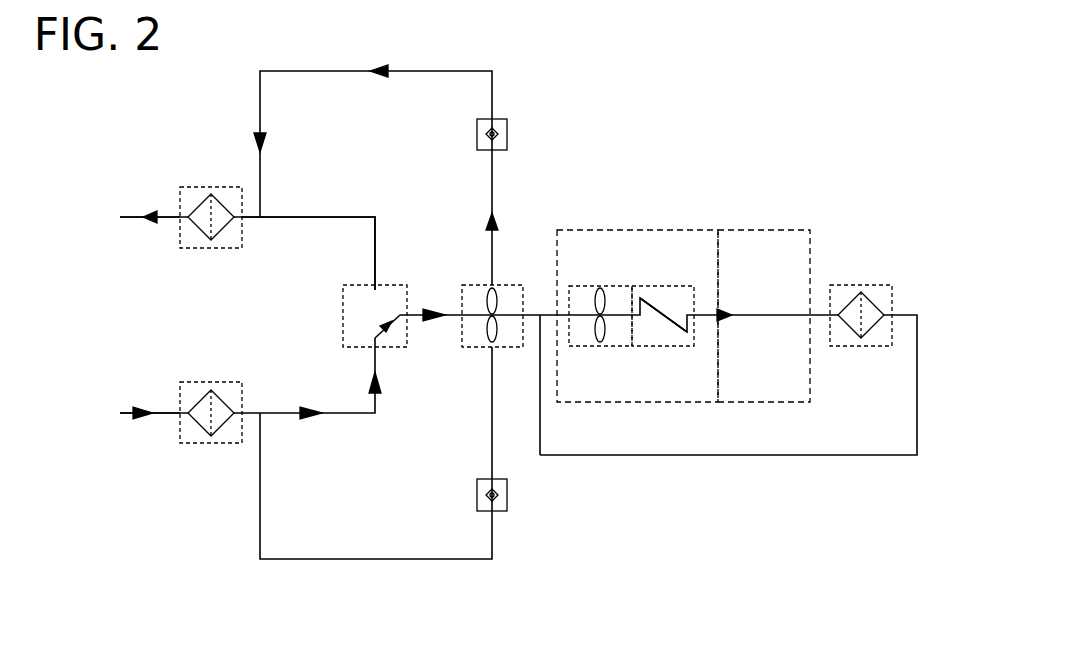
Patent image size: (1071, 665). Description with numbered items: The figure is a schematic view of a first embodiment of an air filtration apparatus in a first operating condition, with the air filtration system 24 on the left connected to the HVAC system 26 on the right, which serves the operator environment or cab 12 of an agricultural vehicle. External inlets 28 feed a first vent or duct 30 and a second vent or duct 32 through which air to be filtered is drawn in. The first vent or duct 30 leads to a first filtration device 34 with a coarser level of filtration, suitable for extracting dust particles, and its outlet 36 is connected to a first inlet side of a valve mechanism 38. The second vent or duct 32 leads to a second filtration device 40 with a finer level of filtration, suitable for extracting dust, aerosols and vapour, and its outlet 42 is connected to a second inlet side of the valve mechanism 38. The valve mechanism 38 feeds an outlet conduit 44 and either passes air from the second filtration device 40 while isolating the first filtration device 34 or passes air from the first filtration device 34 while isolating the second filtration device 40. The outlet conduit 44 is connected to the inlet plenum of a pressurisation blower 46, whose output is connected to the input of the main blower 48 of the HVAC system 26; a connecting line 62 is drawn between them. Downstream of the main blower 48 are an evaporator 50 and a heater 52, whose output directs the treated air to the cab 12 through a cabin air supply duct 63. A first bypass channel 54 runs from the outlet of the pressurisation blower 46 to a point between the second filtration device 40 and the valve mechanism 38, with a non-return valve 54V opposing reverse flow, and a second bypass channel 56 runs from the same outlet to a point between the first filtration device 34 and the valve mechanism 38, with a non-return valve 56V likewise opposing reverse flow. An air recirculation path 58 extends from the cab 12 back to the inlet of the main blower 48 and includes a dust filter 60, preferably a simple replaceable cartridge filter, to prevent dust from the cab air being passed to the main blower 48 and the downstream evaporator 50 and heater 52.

The cab 12 is at (800, 258).
The air filtration system 24 is at (218, 158).
The HVAC system 26 is at (670, 205).
The external inlet 28 is at (134, 315).
The first vent or duct 30 is at (172, 416).
The second vent or duct 32 is at (168, 213).
The first filtration device 34 is at (226, 395).
The outlet 36 is at (283, 411).
The valve mechanism 38 is at (355, 325).
The second filtration device 40 is at (190, 242).
The outlet 42 is at (270, 215).
The outlet conduit 44 is at (448, 320).
The pressurisation blower 46 is at (468, 300).
The main blower 48 is at (585, 295).
The evaporator 50 is at (650, 290).
The heater 52 is at (688, 288).
The first bypass channel 54 is at (335, 70).
The non-return valve 54V is at (477, 145).
The second bypass channel 56 is at (321, 559).
The non-return valve 56V is at (477, 500).
The air recirculation path 58 is at (775, 455).
The dust filter 60 is at (880, 295).
The supply conduit 62 is at (548, 312).
The cabin air supply duct 63 is at (708, 312).